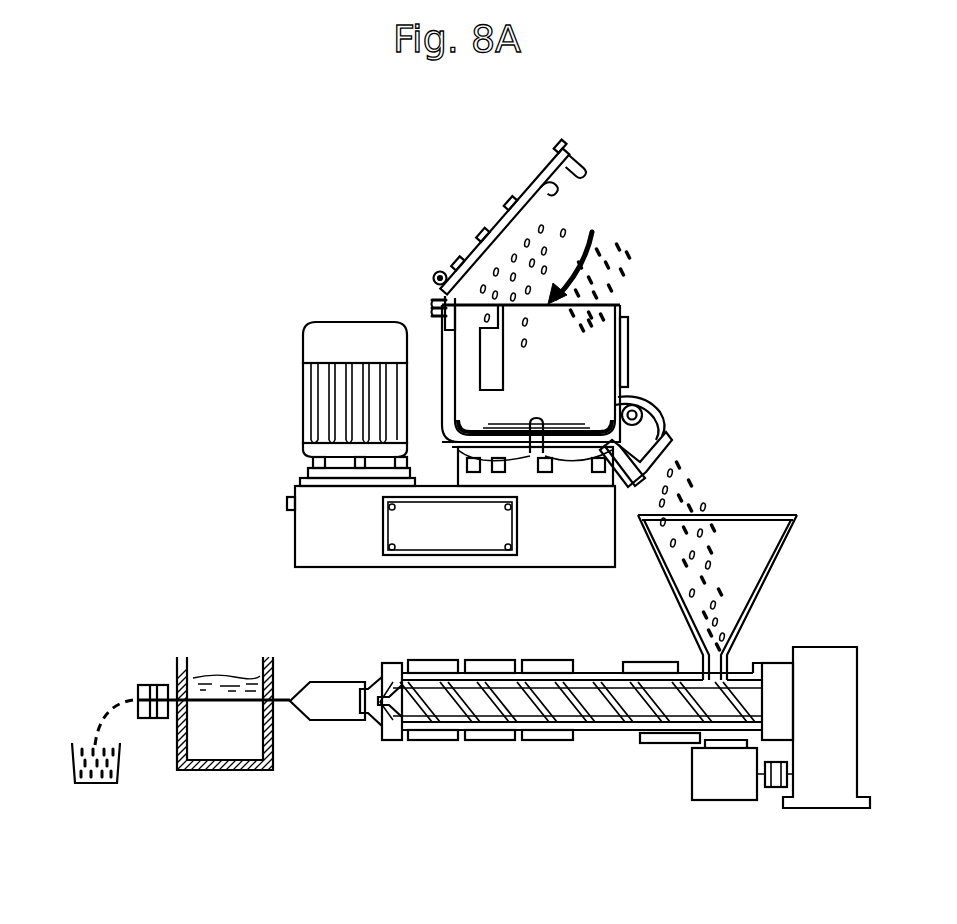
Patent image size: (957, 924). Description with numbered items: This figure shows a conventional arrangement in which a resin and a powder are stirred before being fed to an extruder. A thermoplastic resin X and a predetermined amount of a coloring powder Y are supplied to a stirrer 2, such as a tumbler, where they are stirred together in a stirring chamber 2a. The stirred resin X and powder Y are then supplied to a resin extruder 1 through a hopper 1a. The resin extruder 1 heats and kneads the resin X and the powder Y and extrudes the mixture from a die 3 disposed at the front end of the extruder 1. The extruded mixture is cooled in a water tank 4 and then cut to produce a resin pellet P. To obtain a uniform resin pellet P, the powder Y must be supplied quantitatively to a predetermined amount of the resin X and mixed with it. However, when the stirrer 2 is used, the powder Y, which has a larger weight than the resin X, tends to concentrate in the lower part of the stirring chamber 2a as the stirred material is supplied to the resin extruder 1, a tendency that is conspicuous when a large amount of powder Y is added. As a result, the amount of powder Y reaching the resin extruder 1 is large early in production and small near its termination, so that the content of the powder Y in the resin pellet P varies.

The resin extruder 1 is at (560, 746).
The hopper 1a is at (780, 570).
The stirrer 2 is at (630, 333).
The stirring chamber 2a is at (636, 441).
The die 3 is at (327, 722).
The water tank 4 is at (223, 770).
The resin pellet P is at (108, 702).
The thermoplastic resin X is at (548, 228).
The coloring powder Y is at (633, 256).